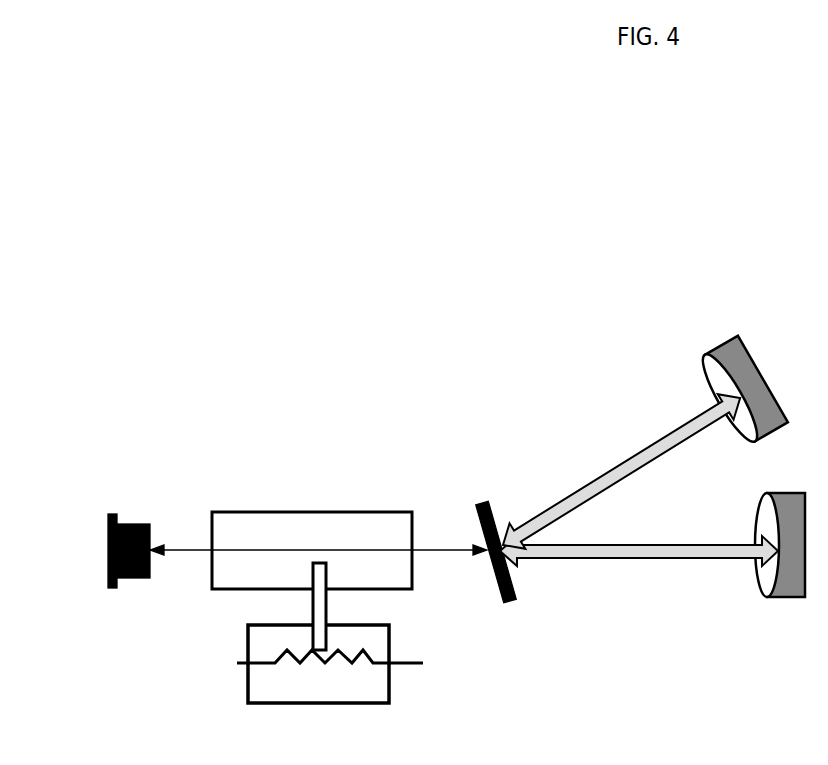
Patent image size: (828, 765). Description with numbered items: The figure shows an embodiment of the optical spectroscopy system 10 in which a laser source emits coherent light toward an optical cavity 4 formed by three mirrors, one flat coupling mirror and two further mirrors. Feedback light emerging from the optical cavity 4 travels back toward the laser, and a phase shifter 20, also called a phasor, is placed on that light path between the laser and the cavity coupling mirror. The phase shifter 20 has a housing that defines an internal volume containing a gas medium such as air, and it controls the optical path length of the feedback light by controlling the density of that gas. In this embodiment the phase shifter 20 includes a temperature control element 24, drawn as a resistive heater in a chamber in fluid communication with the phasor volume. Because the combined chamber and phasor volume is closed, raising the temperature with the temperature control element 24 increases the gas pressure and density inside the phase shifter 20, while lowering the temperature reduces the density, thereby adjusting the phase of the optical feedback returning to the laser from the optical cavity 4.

The optical spectroscopy system 10 is at (337, 347).
The phase shifter 20 is at (247, 512).
The temperature control element 24 is at (273, 676).
The optical cavity 4 is at (636, 475).